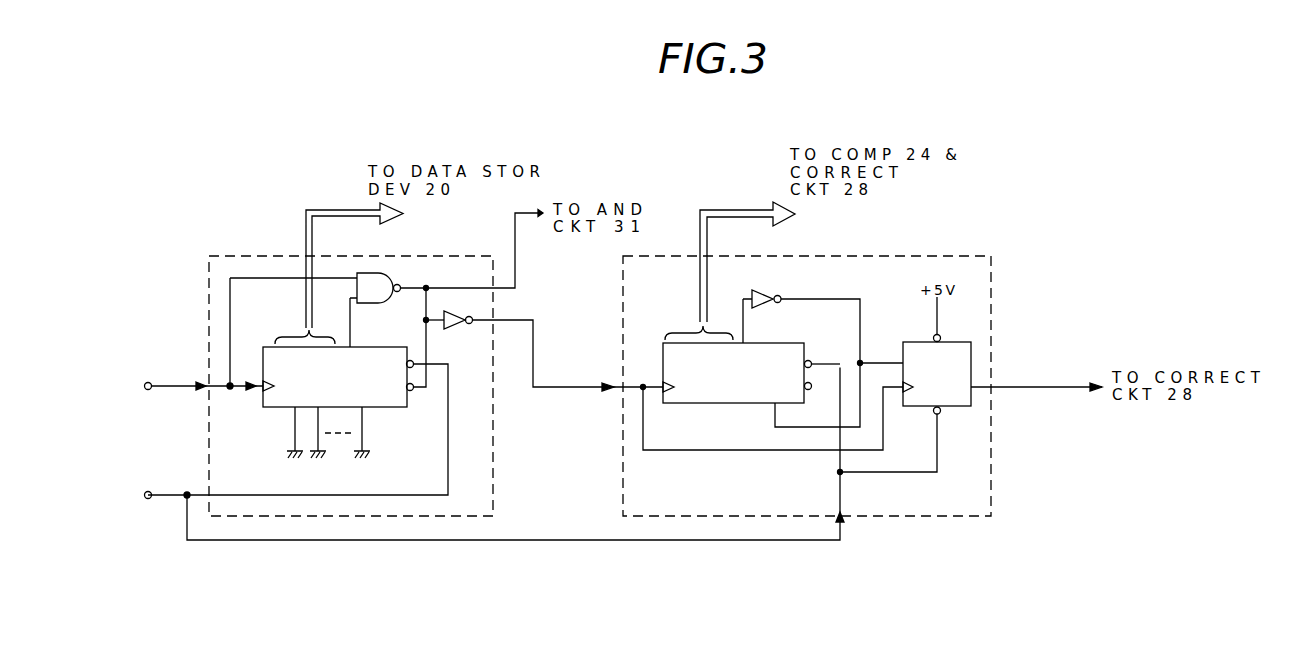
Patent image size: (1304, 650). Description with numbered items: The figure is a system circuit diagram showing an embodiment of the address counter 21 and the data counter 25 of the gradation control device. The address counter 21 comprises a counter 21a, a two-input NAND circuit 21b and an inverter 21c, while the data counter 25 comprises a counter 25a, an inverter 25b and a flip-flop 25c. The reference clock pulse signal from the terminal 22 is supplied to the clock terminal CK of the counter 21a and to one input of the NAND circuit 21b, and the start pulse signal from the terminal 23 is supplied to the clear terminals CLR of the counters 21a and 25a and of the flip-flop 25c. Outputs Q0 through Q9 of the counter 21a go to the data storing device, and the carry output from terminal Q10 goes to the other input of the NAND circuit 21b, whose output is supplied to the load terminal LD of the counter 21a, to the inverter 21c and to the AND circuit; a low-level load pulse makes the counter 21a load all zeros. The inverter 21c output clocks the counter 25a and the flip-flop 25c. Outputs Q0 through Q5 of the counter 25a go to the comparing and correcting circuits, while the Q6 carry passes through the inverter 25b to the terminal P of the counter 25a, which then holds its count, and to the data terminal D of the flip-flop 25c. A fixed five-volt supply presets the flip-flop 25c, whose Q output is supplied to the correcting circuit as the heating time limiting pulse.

The address counter 21 is at (269, 255).
The counter 21a is at (263, 402).
The 2-input NAND circuit 21b is at (377, 300).
The inverter 21c is at (456, 329).
The terminal 22 is at (150, 381).
The terminal 23 is at (150, 490).
The data counter 25 is at (973, 254).
The counter 25a is at (718, 403).
The inverter 25b is at (781, 296).
The flip-flop 25c is at (963, 412).